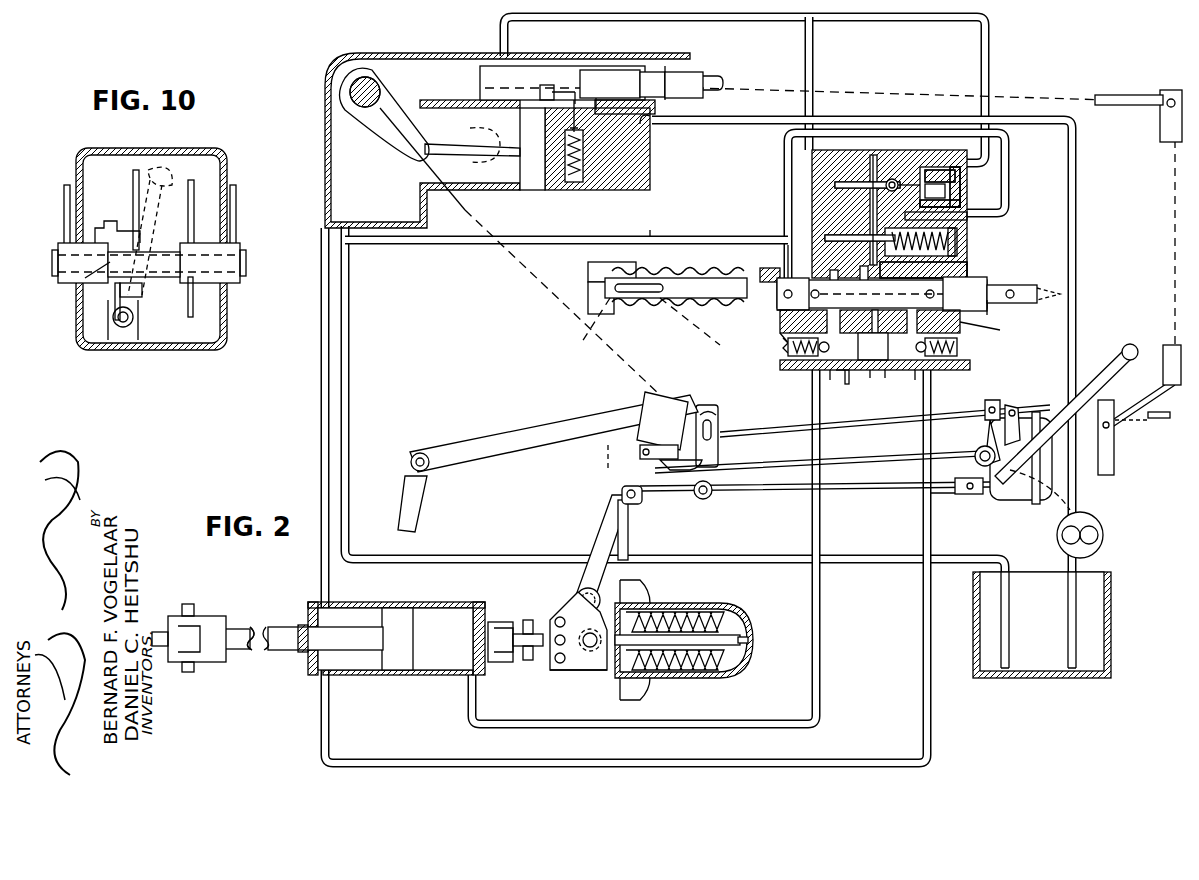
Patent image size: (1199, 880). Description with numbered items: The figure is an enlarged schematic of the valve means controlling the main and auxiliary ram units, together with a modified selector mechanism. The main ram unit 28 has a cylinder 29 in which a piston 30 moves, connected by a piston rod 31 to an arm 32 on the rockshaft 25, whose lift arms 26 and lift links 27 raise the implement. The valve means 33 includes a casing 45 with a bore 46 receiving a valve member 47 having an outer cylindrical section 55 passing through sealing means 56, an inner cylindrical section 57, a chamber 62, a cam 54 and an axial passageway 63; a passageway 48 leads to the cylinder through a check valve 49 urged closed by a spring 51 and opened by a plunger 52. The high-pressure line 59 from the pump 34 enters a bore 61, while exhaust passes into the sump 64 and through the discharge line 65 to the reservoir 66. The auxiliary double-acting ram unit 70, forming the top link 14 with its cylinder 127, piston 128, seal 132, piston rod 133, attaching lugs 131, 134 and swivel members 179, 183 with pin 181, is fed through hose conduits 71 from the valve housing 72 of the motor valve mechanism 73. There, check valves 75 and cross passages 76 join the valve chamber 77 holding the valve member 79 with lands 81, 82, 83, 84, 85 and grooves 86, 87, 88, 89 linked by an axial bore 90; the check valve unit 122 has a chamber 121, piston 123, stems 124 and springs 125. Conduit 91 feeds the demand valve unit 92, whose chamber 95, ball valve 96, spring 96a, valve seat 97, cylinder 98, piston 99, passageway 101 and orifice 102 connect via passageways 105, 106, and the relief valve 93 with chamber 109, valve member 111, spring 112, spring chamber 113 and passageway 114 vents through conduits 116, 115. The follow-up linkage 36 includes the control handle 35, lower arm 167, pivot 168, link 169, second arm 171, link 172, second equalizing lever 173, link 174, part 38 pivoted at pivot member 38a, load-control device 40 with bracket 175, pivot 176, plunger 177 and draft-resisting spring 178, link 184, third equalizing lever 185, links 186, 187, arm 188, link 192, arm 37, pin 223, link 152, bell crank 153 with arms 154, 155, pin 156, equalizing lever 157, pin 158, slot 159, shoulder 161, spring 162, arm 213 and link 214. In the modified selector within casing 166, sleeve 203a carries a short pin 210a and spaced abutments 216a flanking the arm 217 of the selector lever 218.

In FIG. 10, the casing 166 is at (88, 347).
In FIG. 10, the link 169 is at (243, 272).
In FIG. 2, the link 169 is at (800, 490).
In FIG. 10, the short pin 210a is at (108, 240).
In FIG. 10, the sleeve 203a is at (84, 282).
In FIG. 10, the arm 217 is at (135, 290).
In FIG. 10, the abutments 216a is at (133, 312).
In FIG. 10, the selector lever 218 is at (175, 162).
In FIG. 2, the passageway 105 is at (986, 58).
In FIG. 2, the passageway 106 is at (804, 48).
In FIG. 2, the conduit 116 is at (1008, 143).
In FIG. 2, the high-pressure line 59 is at (724, 124).
In FIG. 2, the discharge line 65 is at (350, 318).
In FIG. 2, the hose conduits 71 is at (820, 650).
In FIG. 2, the main ram unit 28 is at (438, 42).
In FIG. 2, the sump 64 is at (338, 210).
In FIG. 2, the casing 45 is at (640, 172).
In FIG. 2, the check valve 49 is at (570, 182).
In FIG. 2, the spring 51 is at (570, 175).
In FIG. 2, the cylinder 29 is at (490, 190).
In FIG. 2, the piston 30 is at (480, 160).
In FIG. 2, the rockshaft 25 is at (362, 76).
In FIG. 2, the arm 32 is at (388, 122).
In FIG. 2, the piston rod 31 is at (442, 146).
In FIG. 2, the valve member 47 is at (472, 74).
In FIG. 2, the axial passageway 63 is at (480, 88).
In FIG. 2, the plunger 52 is at (538, 88).
In FIG. 2, the cam 54 is at (560, 94).
In FIG. 2, the inner cylindrical section 57 is at (580, 72).
In FIG. 2, the chamber 62 is at (600, 70).
In FIG. 2, the bore 46 is at (642, 70).
In FIG. 2, the sealing means 56 is at (660, 66).
In FIG. 2, the valve means 33 is at (668, 68).
In FIG. 2, the outer cylindrical section 55 is at (712, 76).
In FIG. 2, the passageway 48 is at (605, 102).
In FIG. 2, the bore 61 is at (640, 132).
In FIG. 2, the orifice 102 is at (830, 152).
In FIG. 2, the spring 96a is at (835, 185).
In FIG. 2, the chamber 109 is at (840, 236).
In FIG. 2, the chamber 95 is at (873, 160).
In FIG. 2, the high-pressure conduit 91 is at (868, 150).
In FIG. 2, the demand valve unit 92 is at (840, 148).
In FIG. 2, the ball valve 96 is at (890, 170).
In FIG. 2, the valve seat 97 is at (905, 175).
In FIG. 2, the passageway 101 is at (935, 165).
In FIG. 2, the cylinder 98 is at (953, 165).
In FIG. 2, the piston 99 is at (946, 188).
In FIG. 2, the passageway 114 is at (960, 203).
In FIG. 2, the spring chamber 113 is at (968, 216).
In FIG. 2, the valve member 111 is at (960, 235).
In FIG. 2, the spring 112 is at (962, 247).
In FIG. 2, the relief valve 93 is at (968, 262).
In FIG. 2, the land 83 is at (832, 278).
In FIG. 2, the axial bore 90 is at (862, 284).
In FIG. 2, the valve chamber 77 is at (905, 282).
In FIG. 2, the valve member 79 is at (765, 262).
In FIG. 2, the land 81 is at (756, 270).
In FIG. 2, the land 82 is at (790, 298).
In FIG. 2, the land 84 is at (975, 302).
In FIG. 2, the link 214 is at (1038, 286).
In FIG. 2, the land 85 is at (978, 312).
In FIG. 2, the groove 87 is at (803, 322).
In FIG. 2, the cross passages 76 is at (873, 322).
In FIG. 2, the groove 89 is at (938, 322).
In FIG. 2, the valve housing 72 is at (975, 325).
In FIG. 2, the motor valve mechanism 73 is at (770, 318).
In FIG. 2, the groove 86 is at (778, 340).
In FIG. 2, the central groove 88 is at (873, 346).
In FIG. 2, the spring 125 is at (800, 370).
In FIG. 2, the check valves 75 is at (814, 380).
In FIG. 2, the stems 124 is at (835, 372).
In FIG. 2, the chamber 121 is at (850, 382).
In FIG. 2, the piston 123 is at (872, 378).
In FIG. 2, the check valve unit 122 is at (886, 378).
In FIG. 2, the pin 158 is at (602, 278).
In FIG. 2, the equalizing lever 157 is at (600, 304).
In FIG. 2, the slot 159 is at (648, 282).
In FIG. 2, the shoulder 161 is at (725, 282).
In FIG. 2, the spring 162 is at (668, 308).
In FIG. 2, the lift arms 26 is at (494, 430).
In FIG. 2, the lift links 27 is at (418, 512).
In FIG. 2, the arm 37 is at (636, 440).
In FIG. 2, the link 192 is at (798, 433).
In FIG. 2, the link 174 is at (780, 472).
In FIG. 2, the part 38 is at (610, 535).
In FIG. 2, the pivot member 38a is at (578, 592).
In FIG. 2, the link 152 is at (630, 550).
In FIG. 2, the arm 154 is at (662, 500).
In FIG. 2, the bell crank 153 is at (690, 503).
In FIG. 2, the pin 156 is at (716, 420).
In FIG. 2, the arm 155 is at (715, 436).
In FIG. 2, the follow-up linkage 36 is at (1154, 92).
In FIG. 2, the arm 213 is at (928, 493).
In FIG. 2, the lower arm 167 is at (1010, 500).
In FIG. 2, the arm 188 is at (1040, 465).
In FIG. 2, the second arm 171 is at (1005, 400).
In FIG. 2, the link 172 is at (1063, 402).
In FIG. 2, the pivot 168 is at (975, 490).
In FIG. 2, the control handle 35 is at (1105, 370).
In FIG. 2, the link 184 is at (1130, 412).
In FIG. 2, the third equalizing lever 185 is at (1160, 132).
In FIG. 2, the link 186 is at (1115, 100).
In FIG. 2, the second equalizing lever 173 is at (1110, 450).
In FIG. 2, the link 187 is at (1155, 418).
In FIG. 2, the pin 223 is at (1068, 470).
In FIG. 2, the hydraulic pump 34 is at (1086, 520).
In FIG. 2, the reservoir 66 is at (1100, 633).
In FIG. 2, the top link 14 is at (309, 588).
In FIG. 2, the cylinder 127 is at (340, 606).
In FIG. 2, the piston 128 is at (395, 670).
In FIG. 2, the seal 132 is at (300, 654).
In FIG. 2, the piston rod 133 is at (254, 630).
In FIG. 2, the attaching lug 134 is at (210, 664).
In FIG. 2, the swivel member 183 is at (170, 628).
In FIG. 2, the double-acting ram unit 70 is at (306, 672).
In FIG. 2, the attaching lug 131 is at (494, 620).
In FIG. 2, the pin 181 is at (526, 632).
In FIG. 2, the swivel member 179 is at (512, 654).
In FIG. 2, the load-control device 40 is at (564, 679).
In FIG. 2, the bracket 175 is at (552, 668).
In FIG. 2, the pivot 176 is at (590, 650).
In FIG. 2, the plunger 177 is at (748, 640).
In FIG. 2, the draft-resisting spring 178 is at (690, 672).
In FIG. 2, the conduit 115 is at (668, 238).